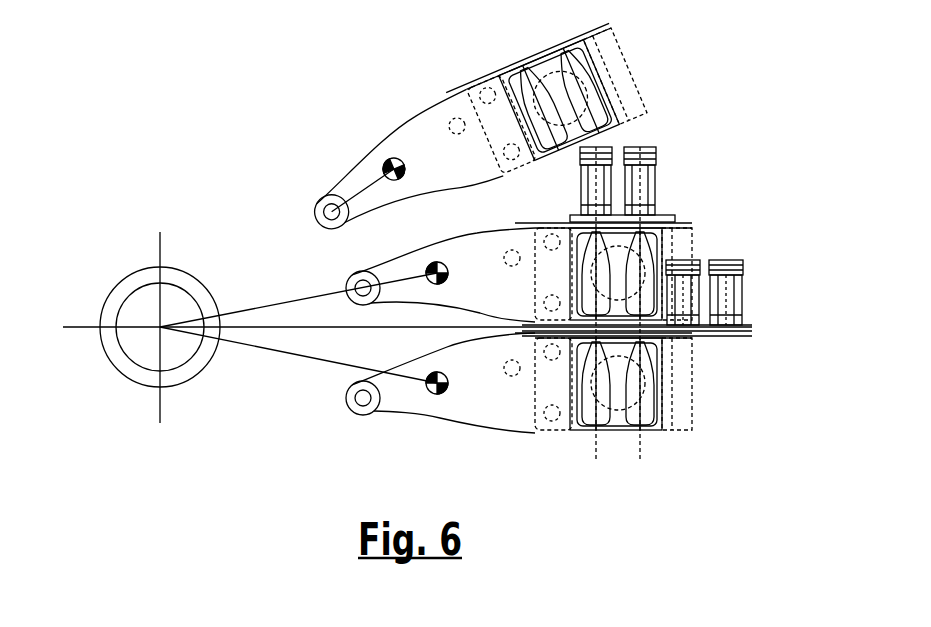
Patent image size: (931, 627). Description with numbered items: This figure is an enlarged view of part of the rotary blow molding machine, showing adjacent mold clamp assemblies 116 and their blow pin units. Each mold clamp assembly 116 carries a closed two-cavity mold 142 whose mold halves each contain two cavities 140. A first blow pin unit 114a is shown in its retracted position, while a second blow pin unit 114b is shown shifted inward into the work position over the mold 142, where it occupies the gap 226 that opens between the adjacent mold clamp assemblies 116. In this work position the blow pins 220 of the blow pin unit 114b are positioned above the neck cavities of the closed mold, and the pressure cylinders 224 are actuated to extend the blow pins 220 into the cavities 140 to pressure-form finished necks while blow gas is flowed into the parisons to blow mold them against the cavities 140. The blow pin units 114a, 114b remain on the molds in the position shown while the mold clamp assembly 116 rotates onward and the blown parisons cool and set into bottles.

The mold clamp assembly 116 is at (645, 59).
The pressure cylinders 224 is at (645, 148).
The upper connectors 114b is at (681, 161).
The gap 226 is at (563, 203).
The blow pins 220 is at (573, 224).
The two-cavity mold 142 is at (524, 297).
The side connectors 114a is at (745, 303).
The cavities 140 is at (630, 433).